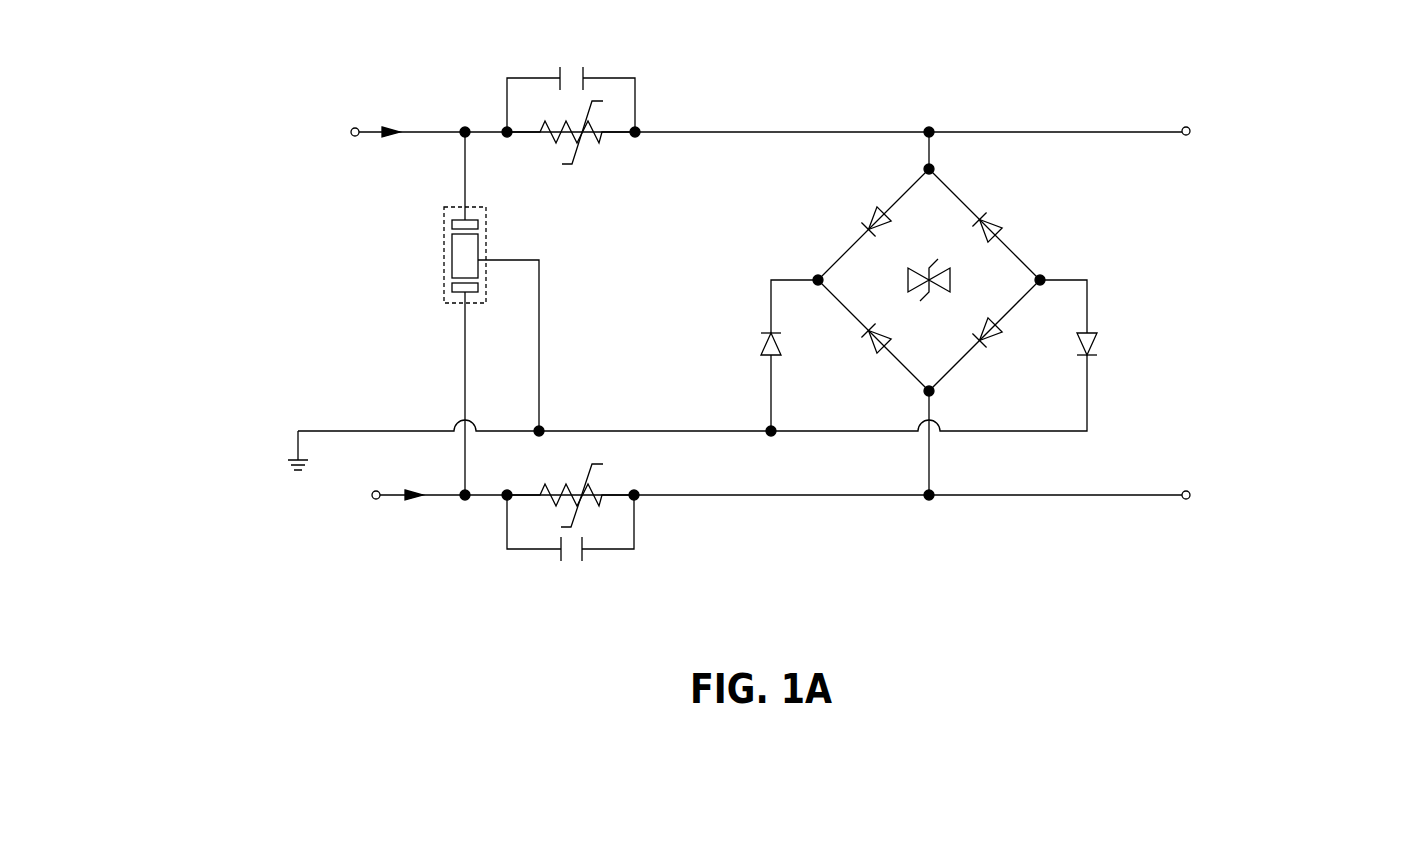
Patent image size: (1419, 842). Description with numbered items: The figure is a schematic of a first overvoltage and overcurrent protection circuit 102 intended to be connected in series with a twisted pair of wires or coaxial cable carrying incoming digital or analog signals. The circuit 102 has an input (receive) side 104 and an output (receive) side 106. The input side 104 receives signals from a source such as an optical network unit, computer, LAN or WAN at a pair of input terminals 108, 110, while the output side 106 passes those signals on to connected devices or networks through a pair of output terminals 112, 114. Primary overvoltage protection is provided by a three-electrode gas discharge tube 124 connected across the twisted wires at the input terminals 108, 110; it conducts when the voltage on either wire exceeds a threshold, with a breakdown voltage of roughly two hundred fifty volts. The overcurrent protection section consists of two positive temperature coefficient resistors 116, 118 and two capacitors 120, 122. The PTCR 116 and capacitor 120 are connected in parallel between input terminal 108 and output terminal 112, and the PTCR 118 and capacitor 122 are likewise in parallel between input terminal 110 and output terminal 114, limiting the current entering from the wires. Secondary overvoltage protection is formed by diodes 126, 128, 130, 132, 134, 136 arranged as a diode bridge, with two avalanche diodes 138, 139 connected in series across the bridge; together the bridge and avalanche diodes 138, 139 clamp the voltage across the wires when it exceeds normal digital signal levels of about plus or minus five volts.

The first overvoltage and overcurrent protection circuit 102 is at (978, 40).
The input (receive) side 104 is at (140, 288).
The output (receive) side 106 is at (1245, 280).
The input terminal 108 is at (370, 128).
The input terminal 110 is at (392, 492).
The output terminal 112 is at (1178, 126).
The output terminal 114 is at (1178, 490).
The positive temperature coefficient resistor 116 is at (600, 142).
The positive temperature coefficient resistor 118 is at (618, 493).
The capacitor 120 is at (540, 77).
The capacitor 122 is at (604, 550).
The three-electrode gas discharge tube 124 is at (444, 245).
The diode 126 is at (870, 222).
The diode 128 is at (986, 222).
The diode 130 is at (873, 341).
The diode 132 is at (996, 340).
The diode 134 is at (765, 338).
The diode 136 is at (1093, 340).
The avalanche diode 138 is at (950, 275).
The avalanche diode 139 is at (912, 292).